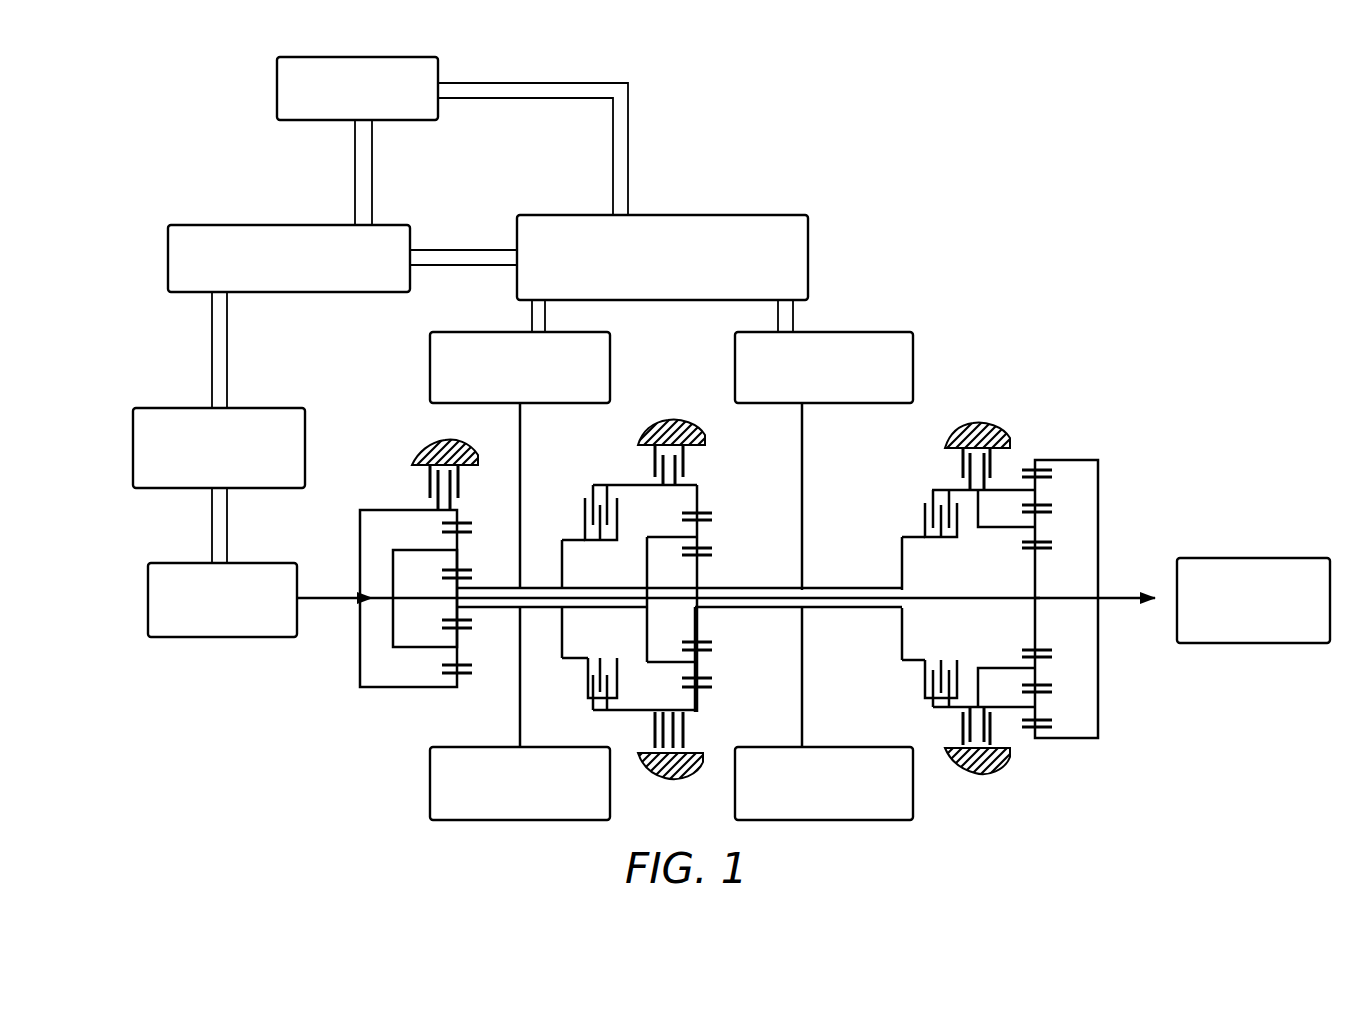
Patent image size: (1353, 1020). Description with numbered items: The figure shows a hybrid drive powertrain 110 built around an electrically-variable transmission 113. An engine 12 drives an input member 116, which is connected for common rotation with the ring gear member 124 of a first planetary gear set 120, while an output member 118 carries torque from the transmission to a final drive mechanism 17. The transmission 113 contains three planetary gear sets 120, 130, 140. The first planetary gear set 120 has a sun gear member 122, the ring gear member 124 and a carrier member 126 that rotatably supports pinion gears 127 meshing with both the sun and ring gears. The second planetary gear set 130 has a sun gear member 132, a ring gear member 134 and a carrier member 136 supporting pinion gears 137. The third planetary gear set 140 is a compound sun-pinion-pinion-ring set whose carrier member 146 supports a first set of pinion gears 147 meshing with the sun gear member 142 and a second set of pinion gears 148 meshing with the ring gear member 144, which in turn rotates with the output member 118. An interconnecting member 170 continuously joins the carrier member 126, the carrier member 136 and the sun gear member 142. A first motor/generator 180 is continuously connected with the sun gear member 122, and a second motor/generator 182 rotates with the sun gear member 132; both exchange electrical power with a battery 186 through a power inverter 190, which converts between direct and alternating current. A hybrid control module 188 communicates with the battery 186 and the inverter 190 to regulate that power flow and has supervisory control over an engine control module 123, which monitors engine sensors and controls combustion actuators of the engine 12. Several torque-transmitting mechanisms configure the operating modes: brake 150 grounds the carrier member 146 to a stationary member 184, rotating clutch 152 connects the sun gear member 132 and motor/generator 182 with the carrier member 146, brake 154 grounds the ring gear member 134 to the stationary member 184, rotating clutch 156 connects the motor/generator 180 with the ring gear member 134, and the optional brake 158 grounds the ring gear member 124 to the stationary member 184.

The engine 12 is at (222, 600).
The final drive mechanism 17 is at (1253, 600).
The powertrain 110 is at (993, 202).
The electrically-variable transmission 113 is at (1033, 252).
The input member 116 is at (325, 597).
The output member 118 is at (1140, 597).
The planetary gear set 120 is at (394, 599).
The sun gear member 122 is at (468, 662).
The engine control module 123 is at (219, 448).
The ring gear member 124 is at (448, 521).
The carrier member 126 is at (420, 650).
The pinion gears 127 is at (447, 660).
The planetary gear set 130 is at (811, 556).
The sun gear member 132 is at (703, 557).
The ring gear member 134 is at (708, 514).
The carrier member 136 is at (665, 537).
The pinion gears 137 is at (700, 541).
The planetary gear set 140 is at (991, 609).
The sun gear member 142 is at (1042, 650).
The ring gear member 144 is at (1027, 468).
The carrier member 146 is at (963, 495).
The first set of pinion gears 147 is at (1045, 530).
The second set of pinion gears 148 is at (1042, 485).
The torque-transmitting mechanism C1 150 is at (954, 464).
The torque-transmitting mechanism C2 152 is at (917, 517).
The torque-transmitting mechanism C3 154 is at (701, 458).
The torque-transmitting mechanism C4 156 is at (576, 514).
The torque-transmitting mechanism C5 158 is at (425, 487).
The interconnecting member 170 is at (578, 605).
The motor/generator 180 is at (520, 576).
The motor/generator 182 is at (824, 576).
The stationary member 184 is at (677, 422).
The energy storage device 186 is at (357, 88).
The hybrid control module 188 is at (289, 258).
The power inverter 190 is at (662, 257).